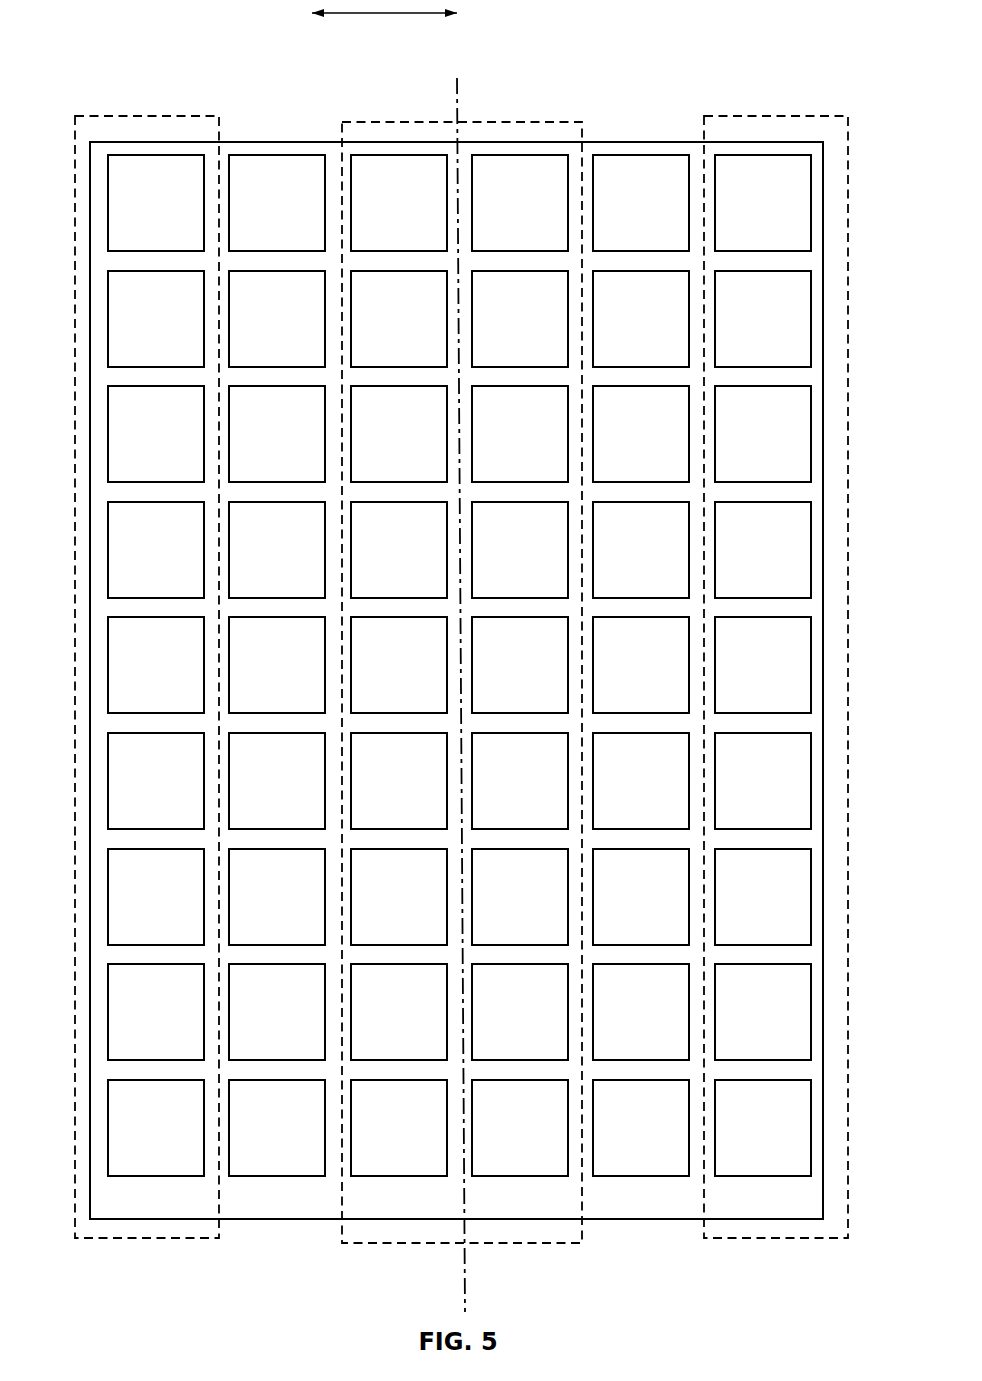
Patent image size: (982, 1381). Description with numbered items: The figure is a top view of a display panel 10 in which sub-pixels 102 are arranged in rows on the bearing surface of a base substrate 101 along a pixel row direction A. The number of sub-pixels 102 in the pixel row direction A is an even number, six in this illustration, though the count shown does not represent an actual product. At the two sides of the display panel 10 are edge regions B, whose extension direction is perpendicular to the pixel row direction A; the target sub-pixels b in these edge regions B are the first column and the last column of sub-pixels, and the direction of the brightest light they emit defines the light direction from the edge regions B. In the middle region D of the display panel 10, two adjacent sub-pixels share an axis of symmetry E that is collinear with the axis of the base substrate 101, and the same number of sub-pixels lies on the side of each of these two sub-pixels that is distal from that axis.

The display panel 10 is at (84, 93).
The base substrate 101 is at (647, 1198).
The sub-pixels 102 is at (626, 176).
The pixel row direction A is at (409, 17).
The edge regions B is at (209, 114).
The target sub-pixels b is at (172, 191).
The middle region D is at (398, 120).
The axis of symmetry E is at (461, 89).